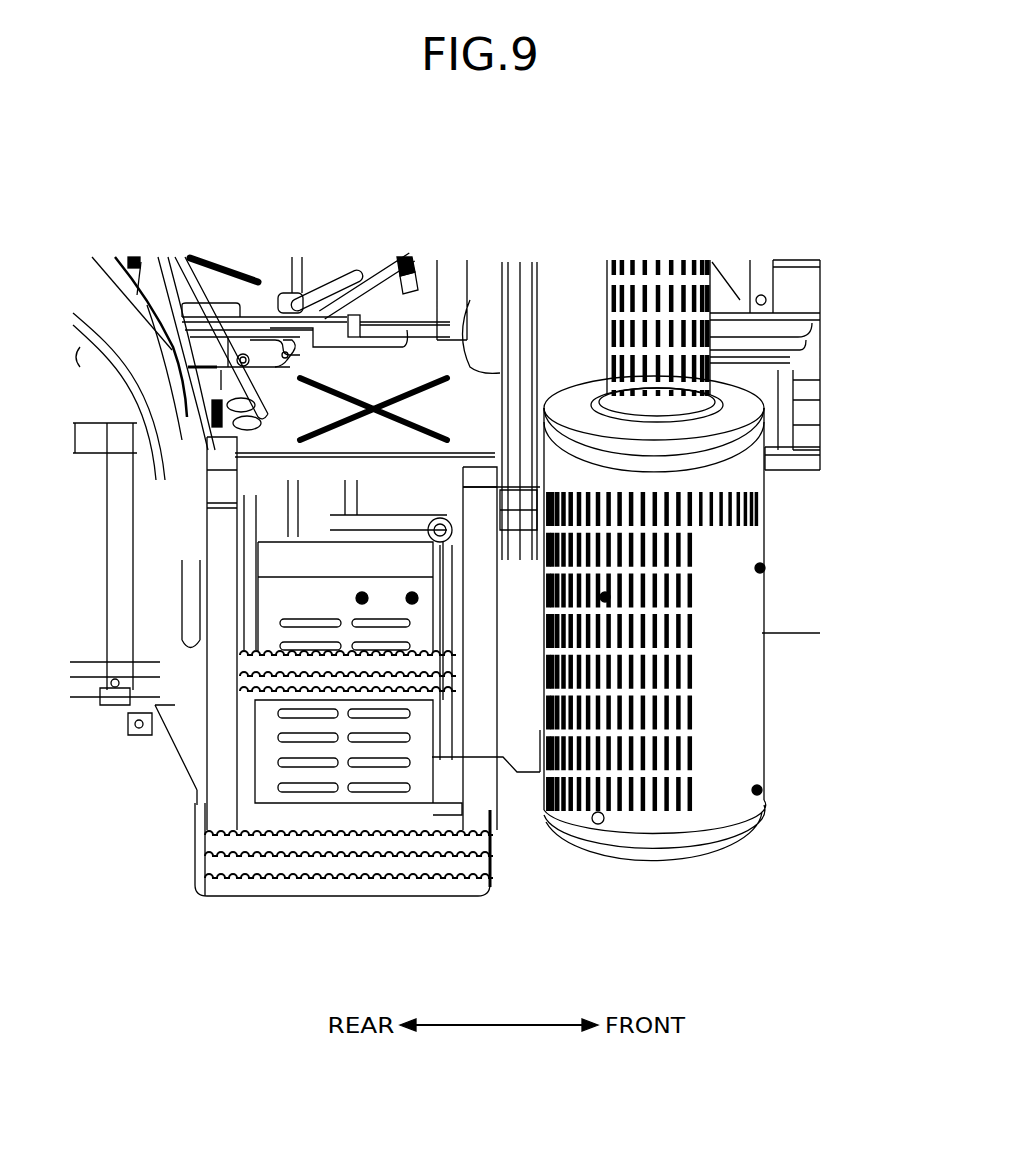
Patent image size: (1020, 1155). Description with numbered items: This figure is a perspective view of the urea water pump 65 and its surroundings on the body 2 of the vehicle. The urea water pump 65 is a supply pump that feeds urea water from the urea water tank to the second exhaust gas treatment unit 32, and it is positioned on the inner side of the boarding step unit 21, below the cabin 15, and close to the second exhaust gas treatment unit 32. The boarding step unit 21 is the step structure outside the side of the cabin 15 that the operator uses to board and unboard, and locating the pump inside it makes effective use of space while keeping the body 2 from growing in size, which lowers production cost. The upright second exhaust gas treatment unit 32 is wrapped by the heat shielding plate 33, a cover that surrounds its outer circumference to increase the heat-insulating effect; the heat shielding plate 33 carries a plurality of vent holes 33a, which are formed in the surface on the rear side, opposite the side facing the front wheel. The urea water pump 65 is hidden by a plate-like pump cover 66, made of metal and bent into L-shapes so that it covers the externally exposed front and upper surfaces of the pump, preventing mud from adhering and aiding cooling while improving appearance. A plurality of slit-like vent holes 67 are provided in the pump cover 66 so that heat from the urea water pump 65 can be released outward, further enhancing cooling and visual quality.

The body 2 is at (266, 187).
The cabin 15 is at (455, 330).
The boarding step unit 21 is at (366, 898).
The second exhaust gas treatment unit 32 is at (764, 748).
The heat shielding plate 33 is at (764, 690).
The vent holes 33a is at (677, 788).
The urea water pump 65 is at (450, 730).
The pump cover 66 is at (265, 778).
The vent holes 67 is at (302, 792).